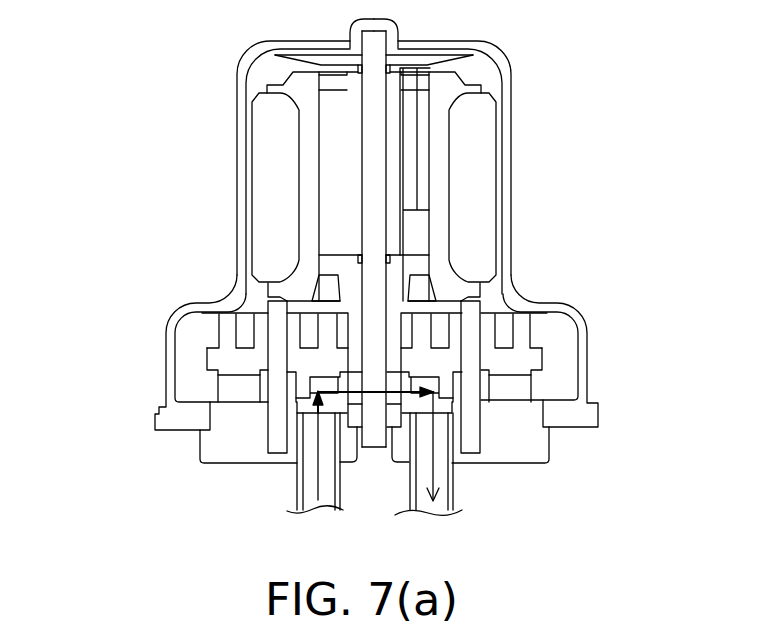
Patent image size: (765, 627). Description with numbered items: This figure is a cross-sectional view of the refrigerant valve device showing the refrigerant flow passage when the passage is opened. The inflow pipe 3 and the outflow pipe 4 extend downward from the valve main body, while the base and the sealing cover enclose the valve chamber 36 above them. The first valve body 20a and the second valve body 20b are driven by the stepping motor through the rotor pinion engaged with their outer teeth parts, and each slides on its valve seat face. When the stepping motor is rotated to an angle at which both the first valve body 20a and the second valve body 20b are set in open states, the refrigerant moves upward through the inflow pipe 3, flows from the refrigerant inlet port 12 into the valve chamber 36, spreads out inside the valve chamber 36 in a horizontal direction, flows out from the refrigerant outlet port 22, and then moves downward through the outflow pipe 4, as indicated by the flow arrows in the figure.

The inflow pipe 3 is at (298, 473).
The outflow pipe 4 is at (445, 473).
The refrigerant inlet port 12 is at (330, 428).
The refrigerant outlet port 22 is at (423, 430).
The first valve body 20a is at (549, 365).
The second valve body 20b is at (203, 364).
The valve chamber 36 is at (558, 333).